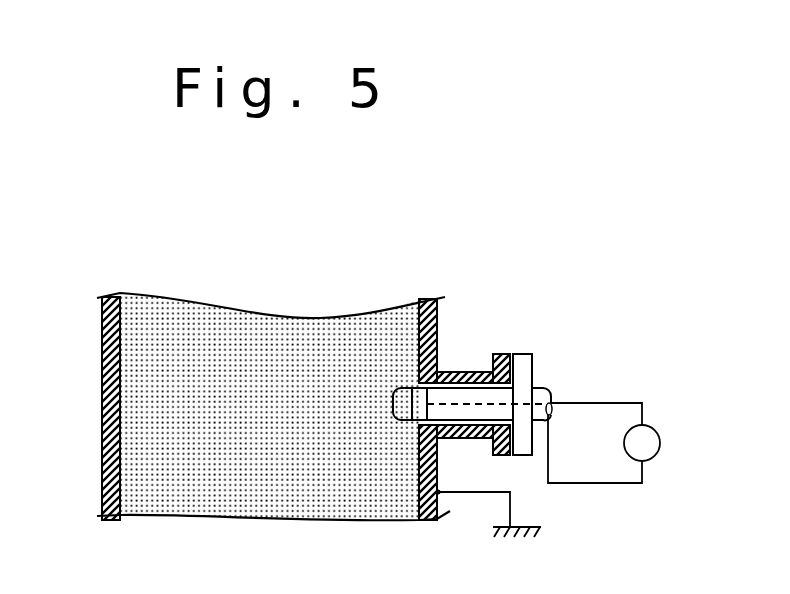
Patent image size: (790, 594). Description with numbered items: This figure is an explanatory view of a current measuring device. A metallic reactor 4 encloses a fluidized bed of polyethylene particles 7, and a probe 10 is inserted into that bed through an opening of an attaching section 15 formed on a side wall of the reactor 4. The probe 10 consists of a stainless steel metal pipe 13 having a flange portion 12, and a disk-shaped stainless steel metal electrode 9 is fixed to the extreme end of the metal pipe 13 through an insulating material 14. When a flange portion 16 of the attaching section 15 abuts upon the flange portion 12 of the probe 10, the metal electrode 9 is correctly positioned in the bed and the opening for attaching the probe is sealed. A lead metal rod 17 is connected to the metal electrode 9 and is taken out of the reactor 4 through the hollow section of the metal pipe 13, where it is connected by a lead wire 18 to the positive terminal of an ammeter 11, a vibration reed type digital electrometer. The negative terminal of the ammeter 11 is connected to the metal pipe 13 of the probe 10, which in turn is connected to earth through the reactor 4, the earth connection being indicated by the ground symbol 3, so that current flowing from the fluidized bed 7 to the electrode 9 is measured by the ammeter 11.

The ground 3 is at (530, 530).
The metallic reactor 4 is at (102, 377).
The fluidized bed of polyethylene particles 7 is at (197, 325).
The disk-shaped metal electrode 9 is at (403, 410).
The probe 10 is at (550, 387).
The ammeter 11 is at (660, 435).
The flange portion 12 is at (532, 356).
The metal pipe 13 is at (458, 397).
The insulating material 14 is at (418, 398).
The attaching section 15 is at (450, 372).
The flange portion 16 is at (500, 355).
The lead metal rod 17 is at (447, 405).
The lead wire 18 is at (620, 403).